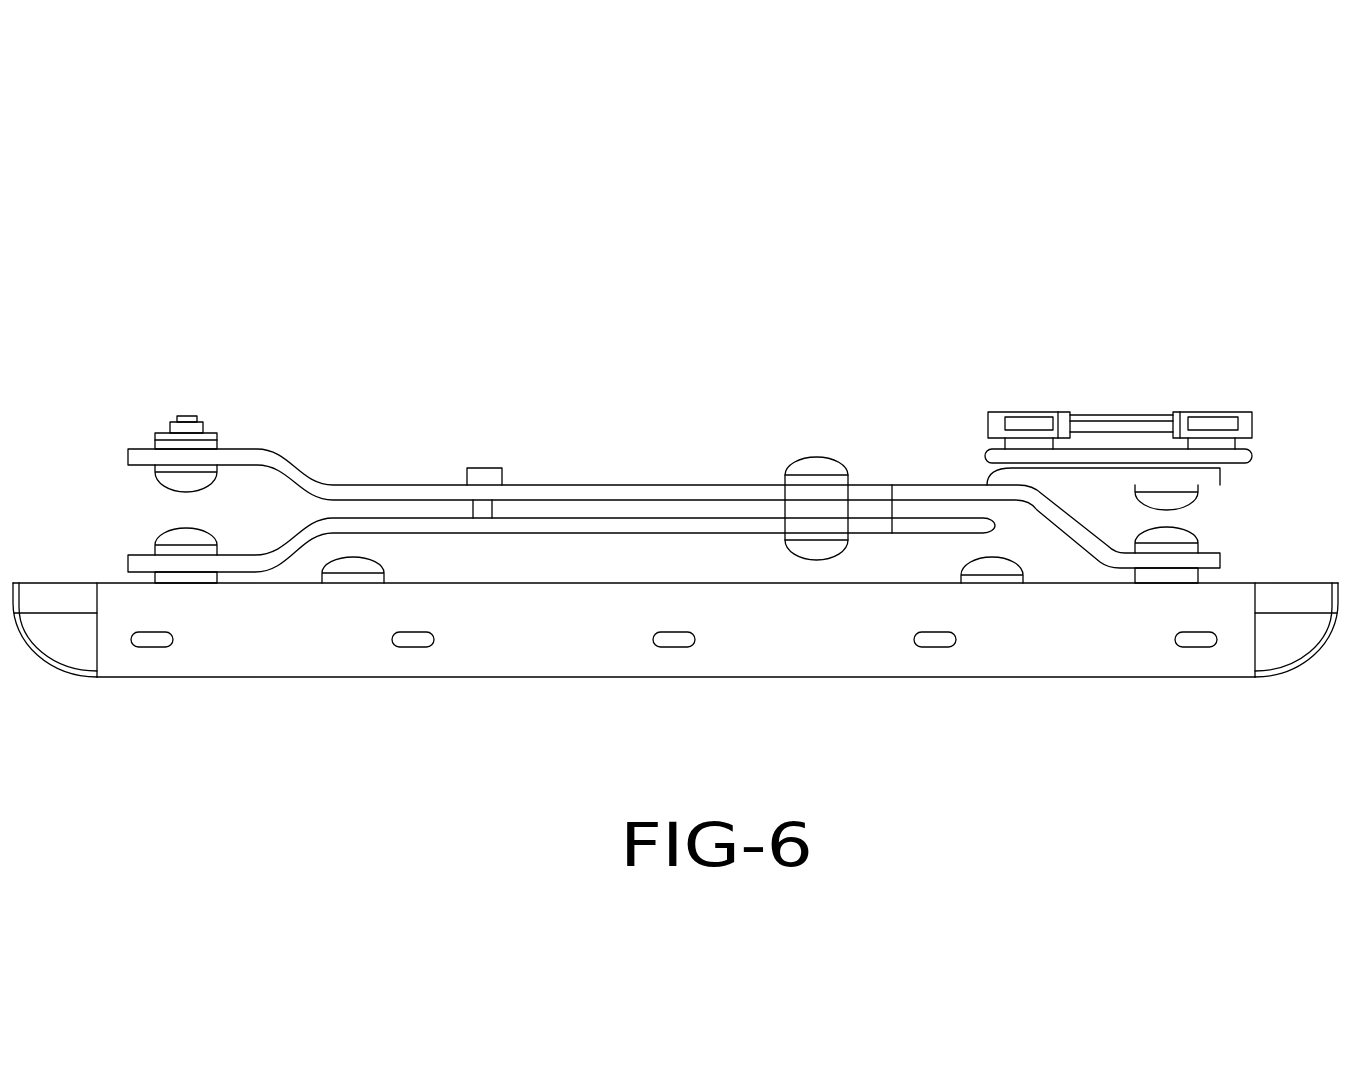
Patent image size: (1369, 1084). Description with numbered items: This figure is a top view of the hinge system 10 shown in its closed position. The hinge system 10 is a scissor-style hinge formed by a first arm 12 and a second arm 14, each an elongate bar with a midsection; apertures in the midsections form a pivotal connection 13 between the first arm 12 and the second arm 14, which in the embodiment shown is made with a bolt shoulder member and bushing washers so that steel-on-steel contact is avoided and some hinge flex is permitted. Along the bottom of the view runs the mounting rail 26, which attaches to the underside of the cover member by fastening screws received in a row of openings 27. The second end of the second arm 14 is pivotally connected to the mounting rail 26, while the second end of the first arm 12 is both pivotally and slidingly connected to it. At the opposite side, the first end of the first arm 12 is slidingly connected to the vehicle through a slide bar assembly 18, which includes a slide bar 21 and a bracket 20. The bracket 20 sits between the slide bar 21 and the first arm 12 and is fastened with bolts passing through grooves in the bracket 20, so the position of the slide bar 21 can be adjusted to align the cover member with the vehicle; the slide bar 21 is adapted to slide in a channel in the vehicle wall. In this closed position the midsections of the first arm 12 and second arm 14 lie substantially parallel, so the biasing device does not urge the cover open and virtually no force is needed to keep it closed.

The hinge system 10 is at (722, 284).
The first arm 12 is at (595, 527).
The pivotal connection 13 is at (848, 406).
The second arm 14 is at (515, 493).
The slide bar assembly 18 is at (1174, 350).
The bracket 20 is at (1242, 460).
The slide bar 21 is at (1122, 425).
The mounting rail 26 is at (855, 665).
The openings 27 is at (657, 640).